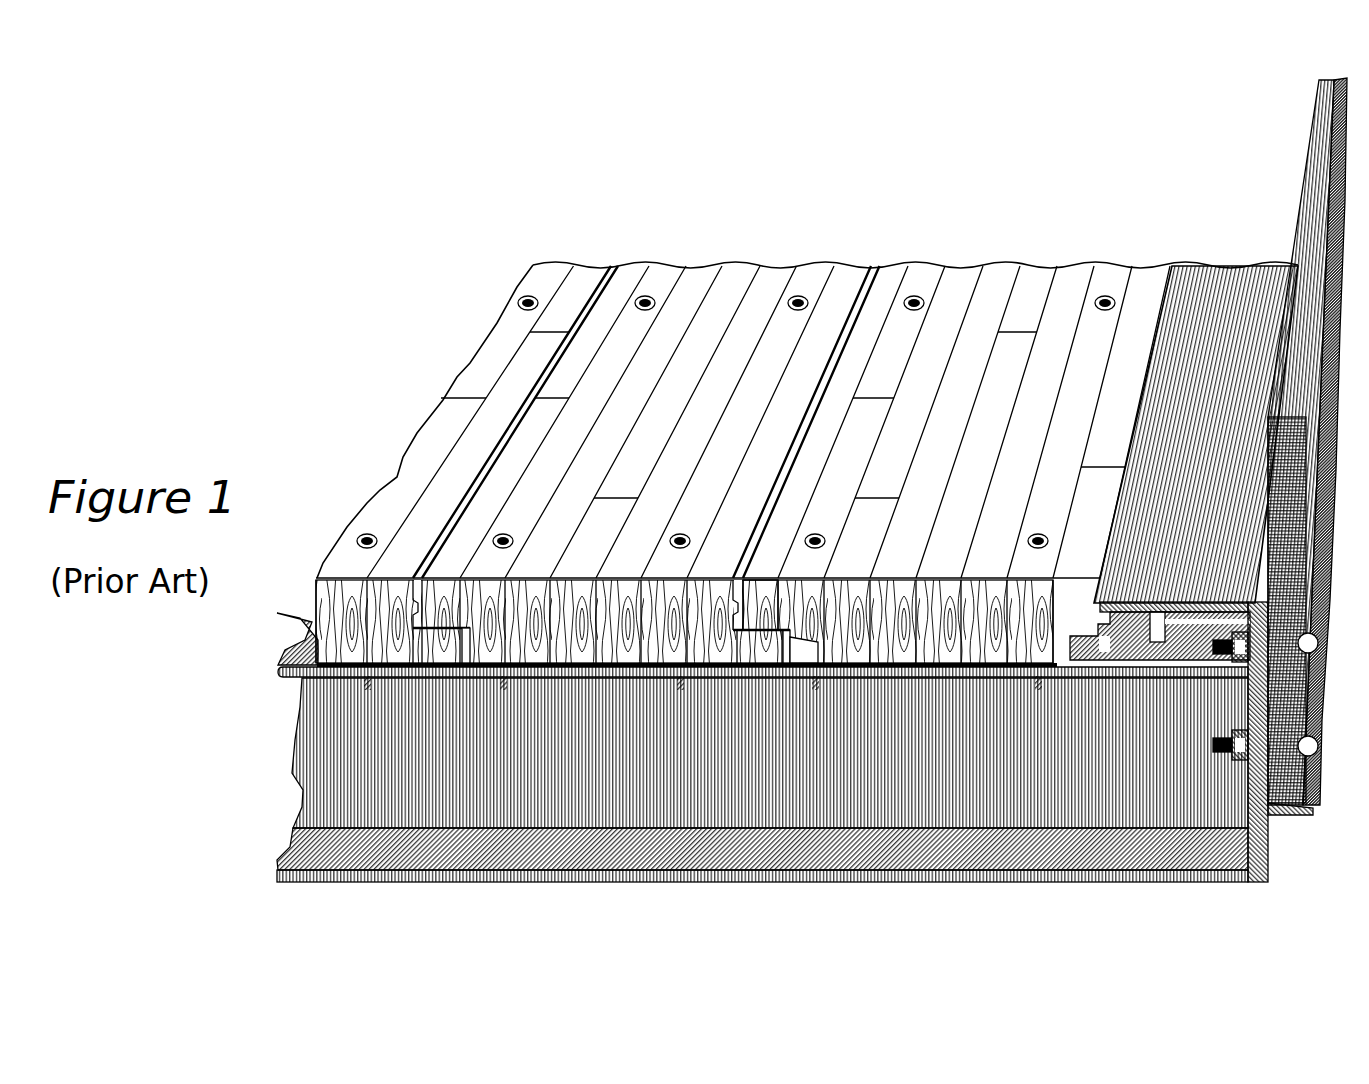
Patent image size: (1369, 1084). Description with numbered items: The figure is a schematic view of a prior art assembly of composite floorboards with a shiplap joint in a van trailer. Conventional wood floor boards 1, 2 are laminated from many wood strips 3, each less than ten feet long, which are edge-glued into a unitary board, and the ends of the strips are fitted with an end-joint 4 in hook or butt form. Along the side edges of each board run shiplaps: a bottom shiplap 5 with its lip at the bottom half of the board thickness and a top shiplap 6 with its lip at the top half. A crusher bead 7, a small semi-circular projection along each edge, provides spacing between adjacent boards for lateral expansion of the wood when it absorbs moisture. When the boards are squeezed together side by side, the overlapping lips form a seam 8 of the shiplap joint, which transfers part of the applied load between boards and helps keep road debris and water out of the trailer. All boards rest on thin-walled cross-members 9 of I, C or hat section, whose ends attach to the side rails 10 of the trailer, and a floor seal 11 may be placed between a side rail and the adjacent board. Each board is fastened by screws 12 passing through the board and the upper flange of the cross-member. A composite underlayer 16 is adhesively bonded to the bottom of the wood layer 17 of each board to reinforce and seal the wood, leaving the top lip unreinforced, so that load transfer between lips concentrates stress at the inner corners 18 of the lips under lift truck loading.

The wood floor board 1 is at (729, 233).
The wood floor board 2 is at (1042, 233).
The wood strips 3 is at (598, 287).
The end-joint 4 is at (472, 399).
The bottom shiplap 5 is at (748, 639).
The top shiplap 6 is at (769, 603).
The crusher bead 7 is at (472, 648).
The seam 8 is at (872, 287).
The cross-members 9 is at (967, 796).
The side rails 10 is at (1270, 806).
The floor seal 11 is at (1240, 294).
The screws 12 is at (800, 296).
The composite underlayer 16 is at (610, 669).
The wood layer 17 is at (535, 629).
The inner corners 18 is at (797, 631).